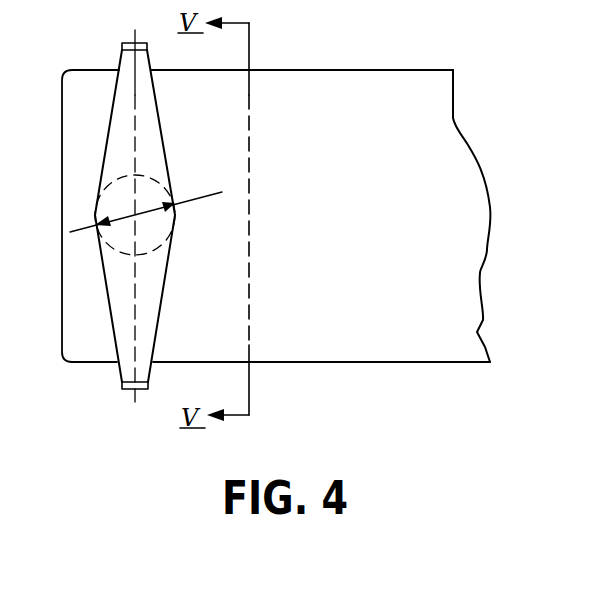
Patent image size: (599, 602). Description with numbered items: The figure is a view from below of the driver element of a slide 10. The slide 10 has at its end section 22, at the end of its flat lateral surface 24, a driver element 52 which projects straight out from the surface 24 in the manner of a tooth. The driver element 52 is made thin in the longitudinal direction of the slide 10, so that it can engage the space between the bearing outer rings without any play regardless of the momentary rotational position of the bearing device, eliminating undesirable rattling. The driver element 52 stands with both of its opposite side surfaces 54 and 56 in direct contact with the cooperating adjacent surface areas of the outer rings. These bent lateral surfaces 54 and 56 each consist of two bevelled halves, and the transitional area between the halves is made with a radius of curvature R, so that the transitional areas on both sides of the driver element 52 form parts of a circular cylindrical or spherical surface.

The slide 10 is at (322, 363).
The end section 22 is at (420, 138).
The flat lateral surface 24 is at (359, 280).
The driver element 52 is at (137, 215).
The side surface 54 is at (107, 127).
The side surface 56 is at (163, 294).